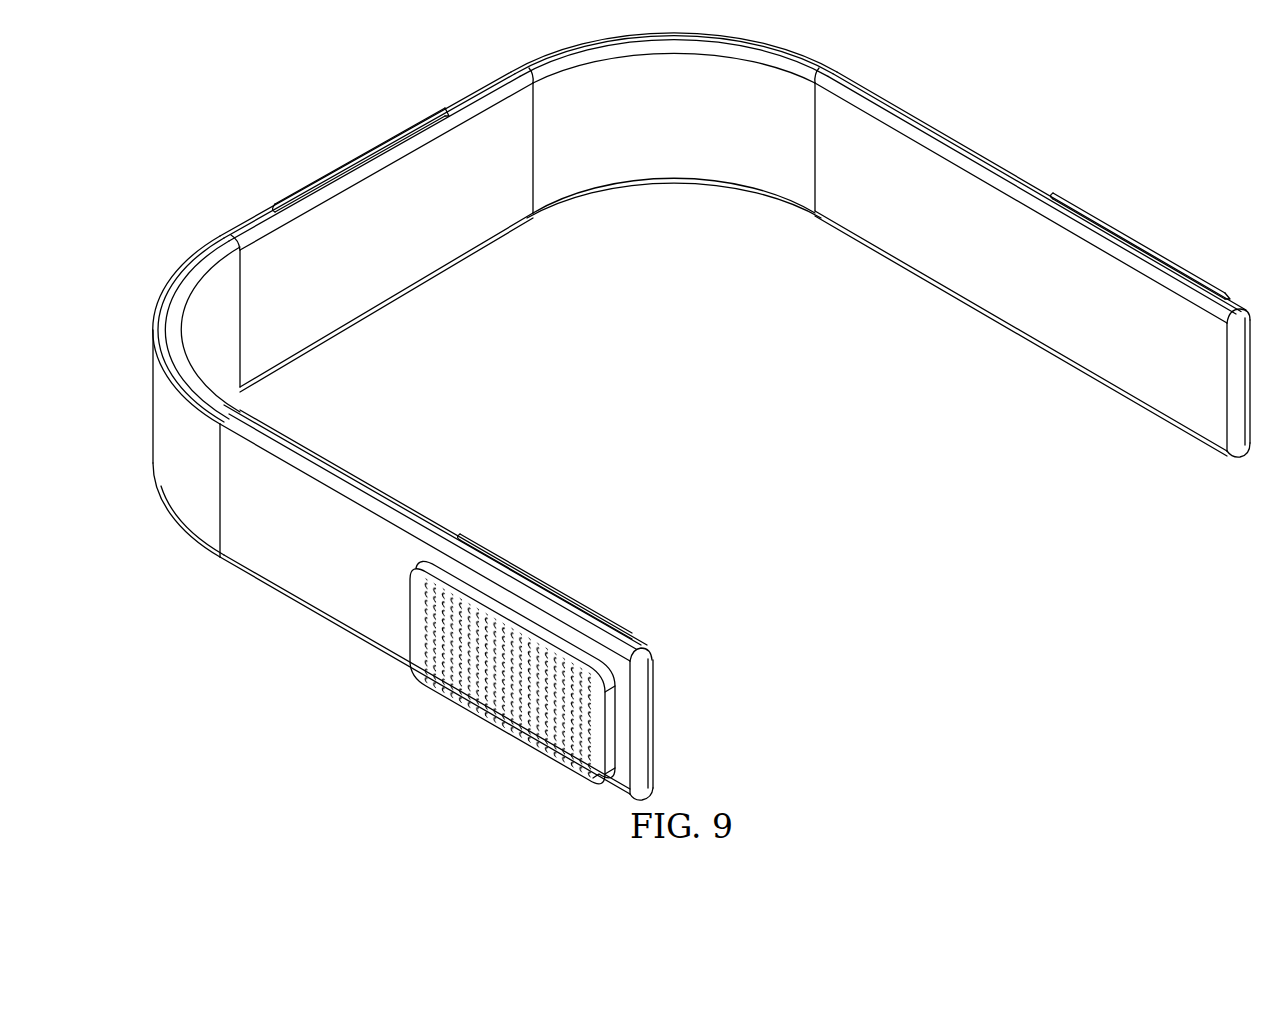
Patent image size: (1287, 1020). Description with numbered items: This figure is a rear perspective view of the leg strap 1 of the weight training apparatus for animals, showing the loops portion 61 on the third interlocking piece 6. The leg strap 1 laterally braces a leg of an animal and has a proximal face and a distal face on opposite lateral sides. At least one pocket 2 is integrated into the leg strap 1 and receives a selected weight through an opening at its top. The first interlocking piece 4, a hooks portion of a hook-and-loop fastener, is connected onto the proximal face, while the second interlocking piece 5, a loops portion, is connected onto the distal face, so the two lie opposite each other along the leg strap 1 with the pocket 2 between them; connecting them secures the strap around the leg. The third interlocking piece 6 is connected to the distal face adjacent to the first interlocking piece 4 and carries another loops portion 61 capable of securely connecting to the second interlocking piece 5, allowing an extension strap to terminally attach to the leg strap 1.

The leg strap 1 is at (446, 272).
The pocket 2 is at (372, 160).
The first interlocking piece 4 is at (567, 589).
The second interlocking piece 5 is at (1138, 240).
The third interlocking piece 6 is at (502, 725).
The loops portion 61 is at (458, 689).